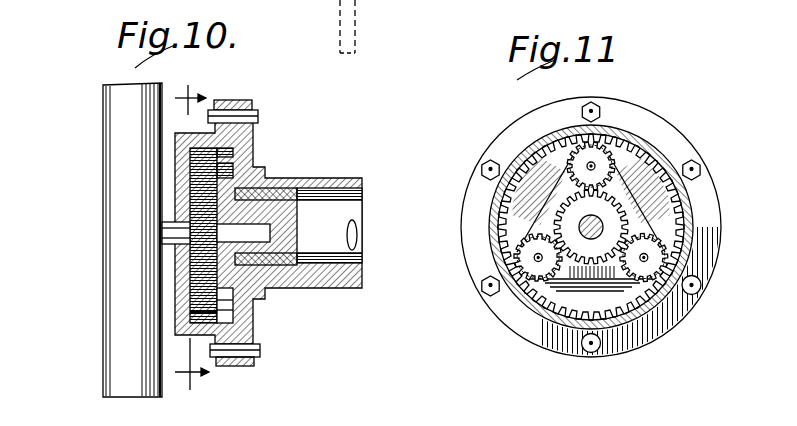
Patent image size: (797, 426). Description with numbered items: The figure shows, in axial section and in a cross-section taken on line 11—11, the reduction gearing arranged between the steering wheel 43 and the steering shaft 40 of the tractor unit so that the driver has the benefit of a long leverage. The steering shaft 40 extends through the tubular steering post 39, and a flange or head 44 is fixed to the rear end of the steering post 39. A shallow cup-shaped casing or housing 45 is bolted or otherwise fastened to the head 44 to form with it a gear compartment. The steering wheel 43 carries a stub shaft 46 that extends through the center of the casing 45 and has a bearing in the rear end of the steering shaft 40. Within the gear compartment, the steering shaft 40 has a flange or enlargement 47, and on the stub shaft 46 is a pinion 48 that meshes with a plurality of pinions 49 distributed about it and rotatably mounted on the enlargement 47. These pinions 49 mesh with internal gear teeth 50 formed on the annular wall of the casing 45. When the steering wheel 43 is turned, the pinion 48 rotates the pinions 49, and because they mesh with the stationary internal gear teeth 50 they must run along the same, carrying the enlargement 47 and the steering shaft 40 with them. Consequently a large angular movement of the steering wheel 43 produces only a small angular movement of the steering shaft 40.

In FIG. 10, the section line 11— 11 is at (192, 241).
In FIG. 10, the tubular steering post 39 is at (332, 198).
In FIG. 10, the steering shaft 40 is at (352, 226).
In FIG. 10, the steering wheel 43 is at (110, 176).
In FIG. 10, the flange or head 44 is at (255, 134).
In FIG. 10, the cup-shaped casing 45 is at (222, 103).
In FIG. 11, the cup-shaped casing 45 is at (523, 128).
In FIG. 10, the stub shaft 46 is at (165, 226).
In FIG. 10, the flange or enlargement 47 is at (225, 162).
In FIG. 11, the flange or enlargement 47 is at (665, 180).
In FIG. 10, the pinion 48 is at (200, 232).
In FIG. 11, the pinion 48 is at (612, 217).
In FIG. 10, the pinions 49 is at (200, 283).
In FIG. 11, the pinions 49 is at (500, 228).
In FIG. 10, the internal gear teeth 50 is at (205, 310).
In FIG. 11, the internal gear teeth 50 is at (620, 205).